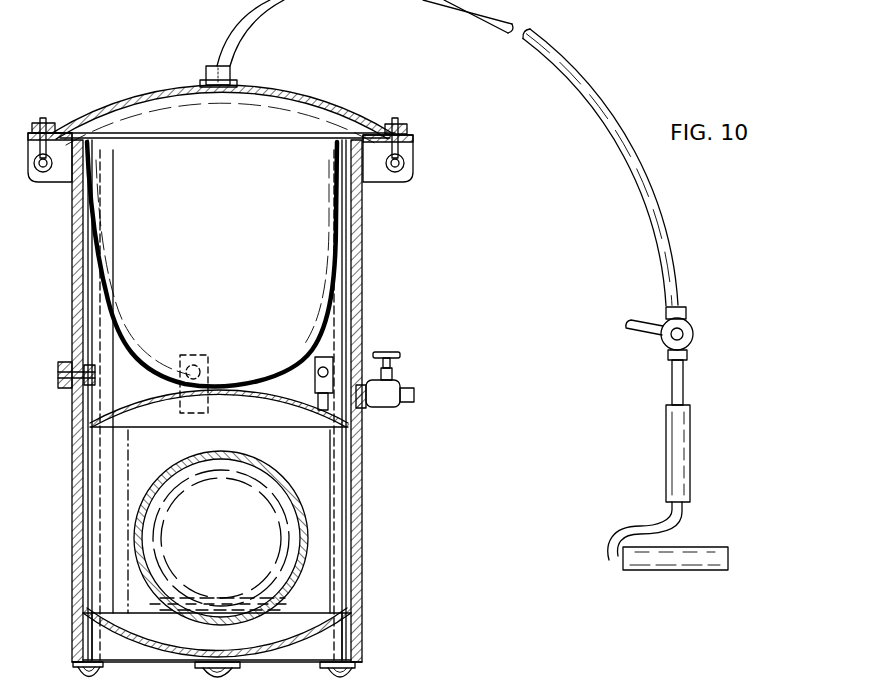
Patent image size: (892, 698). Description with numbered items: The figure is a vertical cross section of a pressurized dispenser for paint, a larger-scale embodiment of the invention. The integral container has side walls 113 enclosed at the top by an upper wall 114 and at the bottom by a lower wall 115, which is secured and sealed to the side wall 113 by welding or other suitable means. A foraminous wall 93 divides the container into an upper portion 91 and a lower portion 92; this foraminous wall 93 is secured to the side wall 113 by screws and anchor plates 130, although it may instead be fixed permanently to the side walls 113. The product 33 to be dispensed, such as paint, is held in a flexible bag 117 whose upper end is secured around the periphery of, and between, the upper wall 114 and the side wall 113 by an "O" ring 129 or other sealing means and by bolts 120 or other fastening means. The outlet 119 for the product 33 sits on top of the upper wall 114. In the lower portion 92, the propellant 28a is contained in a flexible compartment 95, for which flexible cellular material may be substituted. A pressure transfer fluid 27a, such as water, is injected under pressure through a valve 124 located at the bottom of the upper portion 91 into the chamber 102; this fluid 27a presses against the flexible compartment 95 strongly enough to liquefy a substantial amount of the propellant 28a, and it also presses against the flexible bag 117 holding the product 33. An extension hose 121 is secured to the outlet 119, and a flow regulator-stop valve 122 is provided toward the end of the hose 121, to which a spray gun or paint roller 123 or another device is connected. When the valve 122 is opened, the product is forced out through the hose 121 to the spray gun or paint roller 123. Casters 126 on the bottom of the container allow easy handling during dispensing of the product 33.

The upper portion 91 is at (363, 275).
The side walls 113 is at (362, 558).
The upper wall 114 is at (133, 102).
The "O" ring 129 is at (185, 138).
The outlet 119 is at (233, 72).
The bolts 120 is at (412, 167).
The flexible bag 117 is at (110, 290).
The product 33 is at (273, 235).
The screws and anchor plates 130 is at (65, 387).
The foraminous wall 93 is at (148, 408).
The valve 124 is at (390, 408).
The pressure transfer fluid 27a is at (322, 463).
The flexible compartment 95 is at (160, 588).
The propellant 28a is at (240, 600).
The chamber 102 is at (138, 604).
The lower portion 92 is at (357, 615).
The lower wall 115 is at (133, 642).
The casters 126 is at (338, 676).
The extension hose 121 is at (480, 22).
The flow regulator-stop valve 122 is at (642, 336).
The spray gun or paint roller 123 is at (667, 461).